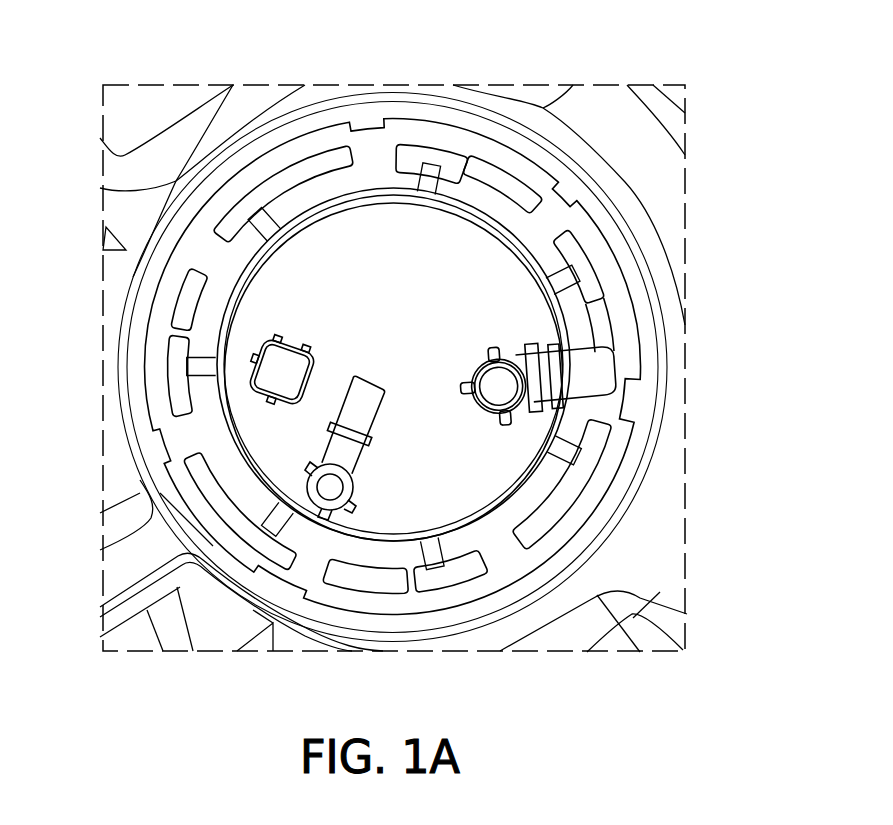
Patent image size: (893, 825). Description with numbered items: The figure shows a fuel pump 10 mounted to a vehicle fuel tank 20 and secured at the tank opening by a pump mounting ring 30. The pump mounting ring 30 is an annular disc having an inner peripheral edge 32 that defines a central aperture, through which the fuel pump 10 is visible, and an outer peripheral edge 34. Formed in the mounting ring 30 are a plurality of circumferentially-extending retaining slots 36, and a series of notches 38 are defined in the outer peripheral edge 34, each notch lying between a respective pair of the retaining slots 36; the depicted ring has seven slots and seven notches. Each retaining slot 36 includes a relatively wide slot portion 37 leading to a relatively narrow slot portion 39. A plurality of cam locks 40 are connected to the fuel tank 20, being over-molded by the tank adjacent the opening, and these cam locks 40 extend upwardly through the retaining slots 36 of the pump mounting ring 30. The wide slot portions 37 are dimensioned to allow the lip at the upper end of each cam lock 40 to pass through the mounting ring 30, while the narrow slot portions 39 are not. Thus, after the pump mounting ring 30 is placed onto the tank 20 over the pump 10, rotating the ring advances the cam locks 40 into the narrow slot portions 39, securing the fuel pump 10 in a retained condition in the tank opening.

The fuel pump 10 is at (465, 300).
The vehicle fuel tank 20 is at (200, 117).
The pump mounting ring 30 is at (285, 157).
The inner peripheral edge 32 is at (237, 417).
The outer peripheral edge 34 is at (150, 297).
The retaining slots 36 is at (548, 514).
The wide slot portion 37 is at (523, 173).
The notches 38 is at (562, 206).
The narrow slot portion 39 is at (396, 143).
The cam locks 40 is at (468, 574).